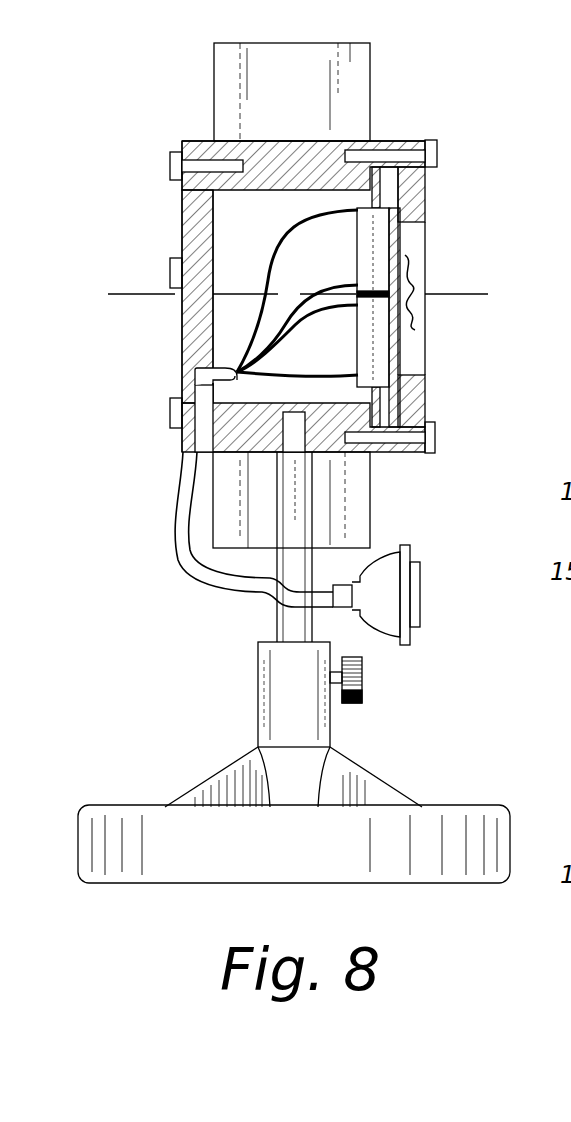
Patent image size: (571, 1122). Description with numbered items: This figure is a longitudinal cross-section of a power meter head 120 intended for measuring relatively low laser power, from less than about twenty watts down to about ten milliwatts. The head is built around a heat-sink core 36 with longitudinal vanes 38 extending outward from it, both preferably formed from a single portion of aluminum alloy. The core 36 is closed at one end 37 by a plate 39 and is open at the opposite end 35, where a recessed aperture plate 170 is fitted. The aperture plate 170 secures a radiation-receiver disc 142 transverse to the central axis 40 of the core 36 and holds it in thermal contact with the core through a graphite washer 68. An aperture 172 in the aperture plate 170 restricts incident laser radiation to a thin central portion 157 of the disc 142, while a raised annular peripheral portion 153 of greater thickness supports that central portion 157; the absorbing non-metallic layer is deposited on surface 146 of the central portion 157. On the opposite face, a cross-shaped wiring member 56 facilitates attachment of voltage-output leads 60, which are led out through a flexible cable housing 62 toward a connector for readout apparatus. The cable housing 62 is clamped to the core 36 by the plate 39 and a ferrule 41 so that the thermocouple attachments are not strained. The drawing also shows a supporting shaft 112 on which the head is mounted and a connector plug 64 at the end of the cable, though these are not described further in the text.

The longitudinal vanes 38 is at (352, 62).
The core 36 is at (267, 138).
The open end 35 is at (350, 200).
The closed end 37 is at (182, 205).
The plate 39 is at (178, 237).
The power meter head 120 is at (127, 250).
The central axis 40 is at (145, 297).
The raised annular peripheral portion 153 is at (427, 188).
The graphite washer 68 is at (388, 177).
The recessed aperture plate 170 is at (425, 203).
The aperture 172 is at (410, 245).
The central portion 157 is at (427, 282).
The radiation-receiver disc 142 is at (410, 360).
The surface 146 is at (400, 342).
The voltage-output leads 60 is at (300, 215).
The wiring member 56 is at (355, 335).
The ferrule 41 is at (203, 440).
The support shaft 112 is at (295, 510).
The flexible cable housing 62 is at (215, 575).
The connector plug 64 is at (385, 583).